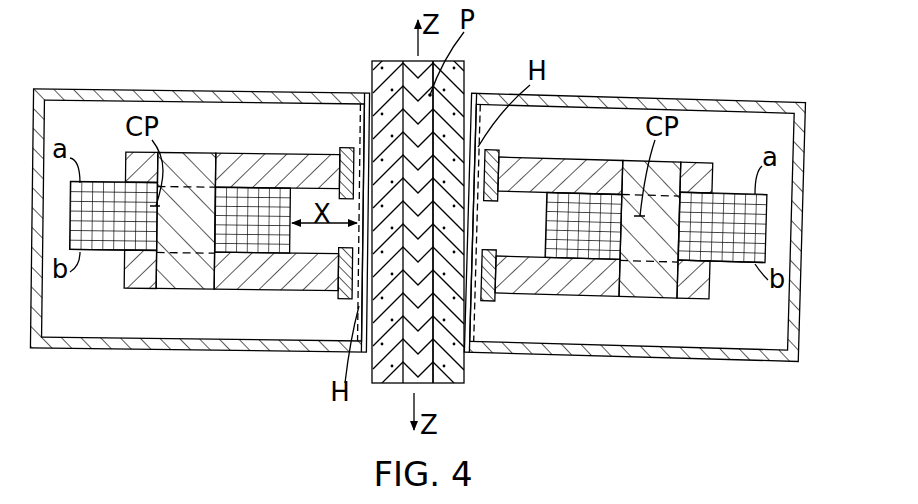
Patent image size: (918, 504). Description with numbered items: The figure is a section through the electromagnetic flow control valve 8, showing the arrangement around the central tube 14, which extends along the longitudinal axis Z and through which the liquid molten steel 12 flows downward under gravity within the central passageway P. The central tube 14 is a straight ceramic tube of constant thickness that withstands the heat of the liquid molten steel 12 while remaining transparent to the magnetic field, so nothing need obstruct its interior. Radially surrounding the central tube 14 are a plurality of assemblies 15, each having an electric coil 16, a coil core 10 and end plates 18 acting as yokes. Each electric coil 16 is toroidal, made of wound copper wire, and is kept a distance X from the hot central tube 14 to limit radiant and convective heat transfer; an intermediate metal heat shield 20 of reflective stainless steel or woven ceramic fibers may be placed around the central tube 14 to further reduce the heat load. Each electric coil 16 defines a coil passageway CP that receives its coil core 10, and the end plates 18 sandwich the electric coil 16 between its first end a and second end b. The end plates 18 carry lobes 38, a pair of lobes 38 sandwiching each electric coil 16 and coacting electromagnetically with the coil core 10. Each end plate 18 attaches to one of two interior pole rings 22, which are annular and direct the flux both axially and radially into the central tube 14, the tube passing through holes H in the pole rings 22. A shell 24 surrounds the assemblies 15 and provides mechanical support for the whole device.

The electromagnetic flow control valve 8 is at (676, 102).
The coil core 10 is at (175, 165).
The liquid molten steel 12 is at (412, 76).
The central tube 14 is at (455, 82).
The assembly 15 is at (97, 180).
The electric coil 16 is at (100, 252).
The end plate 18 is at (248, 156).
The intermediate metal heat shield 20 is at (358, 150).
The interior pole ring 22 is at (341, 148).
The shell 24 is at (180, 353).
The lobe 38 is at (283, 156).